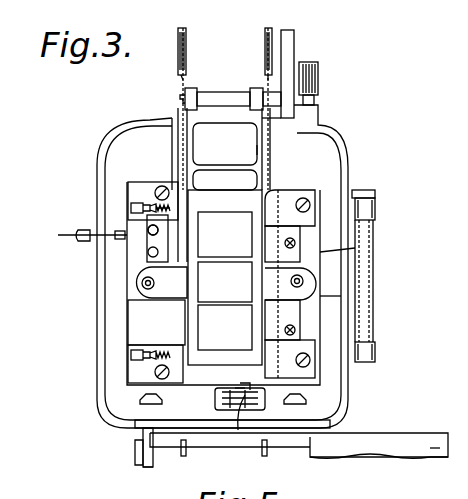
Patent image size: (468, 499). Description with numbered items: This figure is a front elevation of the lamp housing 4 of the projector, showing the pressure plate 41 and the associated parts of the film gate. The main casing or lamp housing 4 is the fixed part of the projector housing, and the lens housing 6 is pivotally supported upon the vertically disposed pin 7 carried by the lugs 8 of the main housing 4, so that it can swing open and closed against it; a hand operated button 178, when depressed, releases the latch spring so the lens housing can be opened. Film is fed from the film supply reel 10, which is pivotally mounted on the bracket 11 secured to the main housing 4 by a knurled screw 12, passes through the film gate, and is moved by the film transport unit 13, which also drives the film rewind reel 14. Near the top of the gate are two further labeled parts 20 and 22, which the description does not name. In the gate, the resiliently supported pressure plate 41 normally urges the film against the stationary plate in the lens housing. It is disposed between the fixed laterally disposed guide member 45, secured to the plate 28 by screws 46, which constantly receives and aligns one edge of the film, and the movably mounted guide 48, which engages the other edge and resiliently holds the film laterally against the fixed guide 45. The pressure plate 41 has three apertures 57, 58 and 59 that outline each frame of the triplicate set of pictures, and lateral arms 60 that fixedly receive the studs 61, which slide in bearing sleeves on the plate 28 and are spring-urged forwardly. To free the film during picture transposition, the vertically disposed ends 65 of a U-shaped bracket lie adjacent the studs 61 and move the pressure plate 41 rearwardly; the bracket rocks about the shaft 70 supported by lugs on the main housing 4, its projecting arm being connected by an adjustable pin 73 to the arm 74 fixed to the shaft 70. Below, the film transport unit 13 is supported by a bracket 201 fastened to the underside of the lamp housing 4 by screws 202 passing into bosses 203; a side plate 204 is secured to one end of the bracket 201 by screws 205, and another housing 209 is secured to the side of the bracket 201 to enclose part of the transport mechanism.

The main casing or lamp housing 4 is at (91, 309).
The lens housing 6 is at (455, 282).
The vertically disposed pin 7 is at (368, 263).
The lugs 8 is at (375, 205).
The film supply reel 10 is at (265, 50).
The bracket 11 is at (294, 43).
The knurled screw 12 is at (318, 78).
The film transport unit 13 is at (390, 465).
The film rewind reel 14 is at (129, 240).
The upper carrier block 20 is at (221, 195).
The carrier guide 22 is at (262, 148).
The plate 28 is at (322, 250).
The pressure plate 41 is at (322, 297).
The fixed laterally disposed guide member 45 is at (285, 205).
The screws 46 is at (295, 243).
The movably mounted guide 48 is at (170, 185).
The aperture 57 is at (225, 234).
The aperture 58 is at (225, 282).
The aperture 59 is at (225, 327).
The lateral arms 60 is at (300, 291).
The studs 61 is at (141, 283).
The vertically disposed ends of the U-shaped bracket 65 is at (215, 398).
The shaft 70 is at (238, 432).
The adjustable pin 73 is at (245, 386).
The arm 74 is at (245, 388).
The hand operated button 178 is at (90, 244).
The bracket 201 is at (178, 458).
The screws 202 is at (150, 396).
The bosses 203 is at (150, 428).
The side plate 204 is at (140, 473).
The screws 205 is at (140, 459).
The housing 209 is at (440, 452).